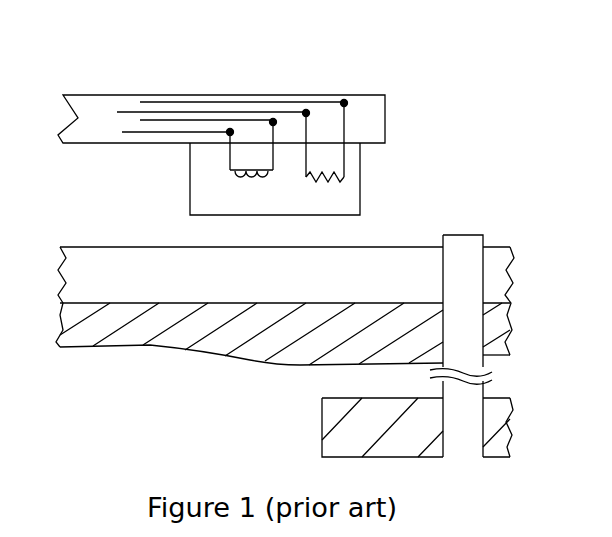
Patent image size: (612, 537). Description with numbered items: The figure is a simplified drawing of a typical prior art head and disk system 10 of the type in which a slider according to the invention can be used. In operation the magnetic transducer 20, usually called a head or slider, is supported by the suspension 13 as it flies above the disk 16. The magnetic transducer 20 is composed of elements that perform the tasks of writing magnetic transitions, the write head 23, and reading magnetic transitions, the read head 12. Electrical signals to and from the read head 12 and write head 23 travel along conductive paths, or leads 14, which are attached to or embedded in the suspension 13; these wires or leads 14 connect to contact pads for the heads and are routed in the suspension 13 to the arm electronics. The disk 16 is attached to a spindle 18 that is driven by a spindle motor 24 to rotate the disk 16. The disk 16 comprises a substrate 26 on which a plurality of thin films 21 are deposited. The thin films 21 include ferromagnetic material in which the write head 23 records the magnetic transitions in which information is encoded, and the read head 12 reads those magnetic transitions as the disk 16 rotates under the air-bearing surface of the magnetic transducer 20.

The head and disk system 10 is at (115, 67).
The read head 12 is at (350, 178).
The suspension 13 is at (375, 128).
The conductive paths (leads) 14 is at (337, 125).
The disk 16 is at (77, 237).
The spindle 18 is at (475, 243).
The magnetic transducer 20 is at (363, 207).
The thin films 21 is at (346, 282).
The write head 23 is at (225, 180).
The spindle motor 24 is at (337, 432).
The substrate 26 is at (93, 337).